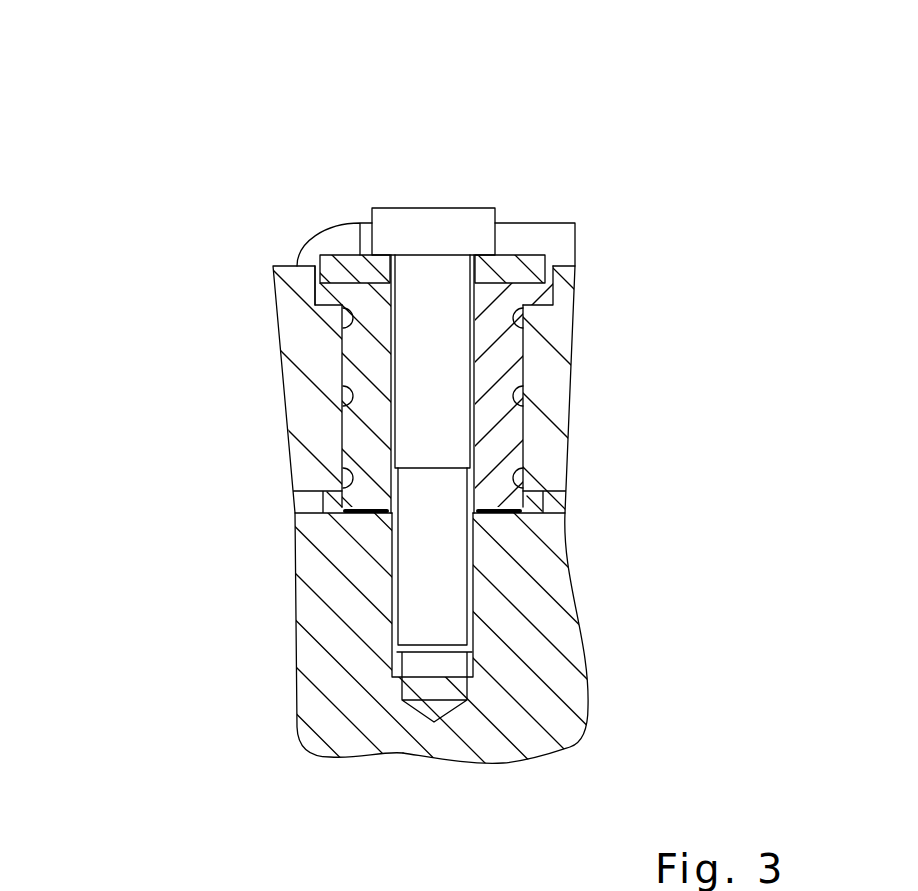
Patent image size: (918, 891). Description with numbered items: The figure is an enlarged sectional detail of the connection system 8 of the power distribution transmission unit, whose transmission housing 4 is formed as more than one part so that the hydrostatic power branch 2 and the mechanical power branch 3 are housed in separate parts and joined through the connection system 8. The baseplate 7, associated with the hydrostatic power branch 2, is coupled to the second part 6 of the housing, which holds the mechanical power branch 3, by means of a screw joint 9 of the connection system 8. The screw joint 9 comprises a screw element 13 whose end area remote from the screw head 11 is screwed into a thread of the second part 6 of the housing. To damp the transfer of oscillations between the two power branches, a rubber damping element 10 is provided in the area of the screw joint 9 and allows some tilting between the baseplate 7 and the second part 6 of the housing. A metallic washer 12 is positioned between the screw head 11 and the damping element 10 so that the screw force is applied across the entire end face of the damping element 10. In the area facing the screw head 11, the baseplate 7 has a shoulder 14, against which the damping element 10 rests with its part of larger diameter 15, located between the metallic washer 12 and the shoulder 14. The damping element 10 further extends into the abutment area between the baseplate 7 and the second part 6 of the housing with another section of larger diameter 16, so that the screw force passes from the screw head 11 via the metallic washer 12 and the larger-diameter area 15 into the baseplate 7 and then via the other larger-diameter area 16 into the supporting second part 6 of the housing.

The hydrostatic power branch 2 is at (601, 421).
The mechanical power branch 3 is at (603, 680).
The transmission housing 4 is at (257, 733).
The second part of the housing 6 is at (353, 677).
The baseplate 7 is at (305, 449).
The connection system 8 is at (604, 228).
The screw joint 9 is at (504, 213).
The damping element 10 is at (365, 362).
The screw head 11 is at (392, 220).
The metallic washer 12 is at (342, 268).
The screw element 13 is at (442, 608).
The shoulder 14 is at (527, 312).
The larger-diameter part of the damping element 15 is at (545, 298).
The other larger-diameter section of the damping element 16 is at (345, 510).